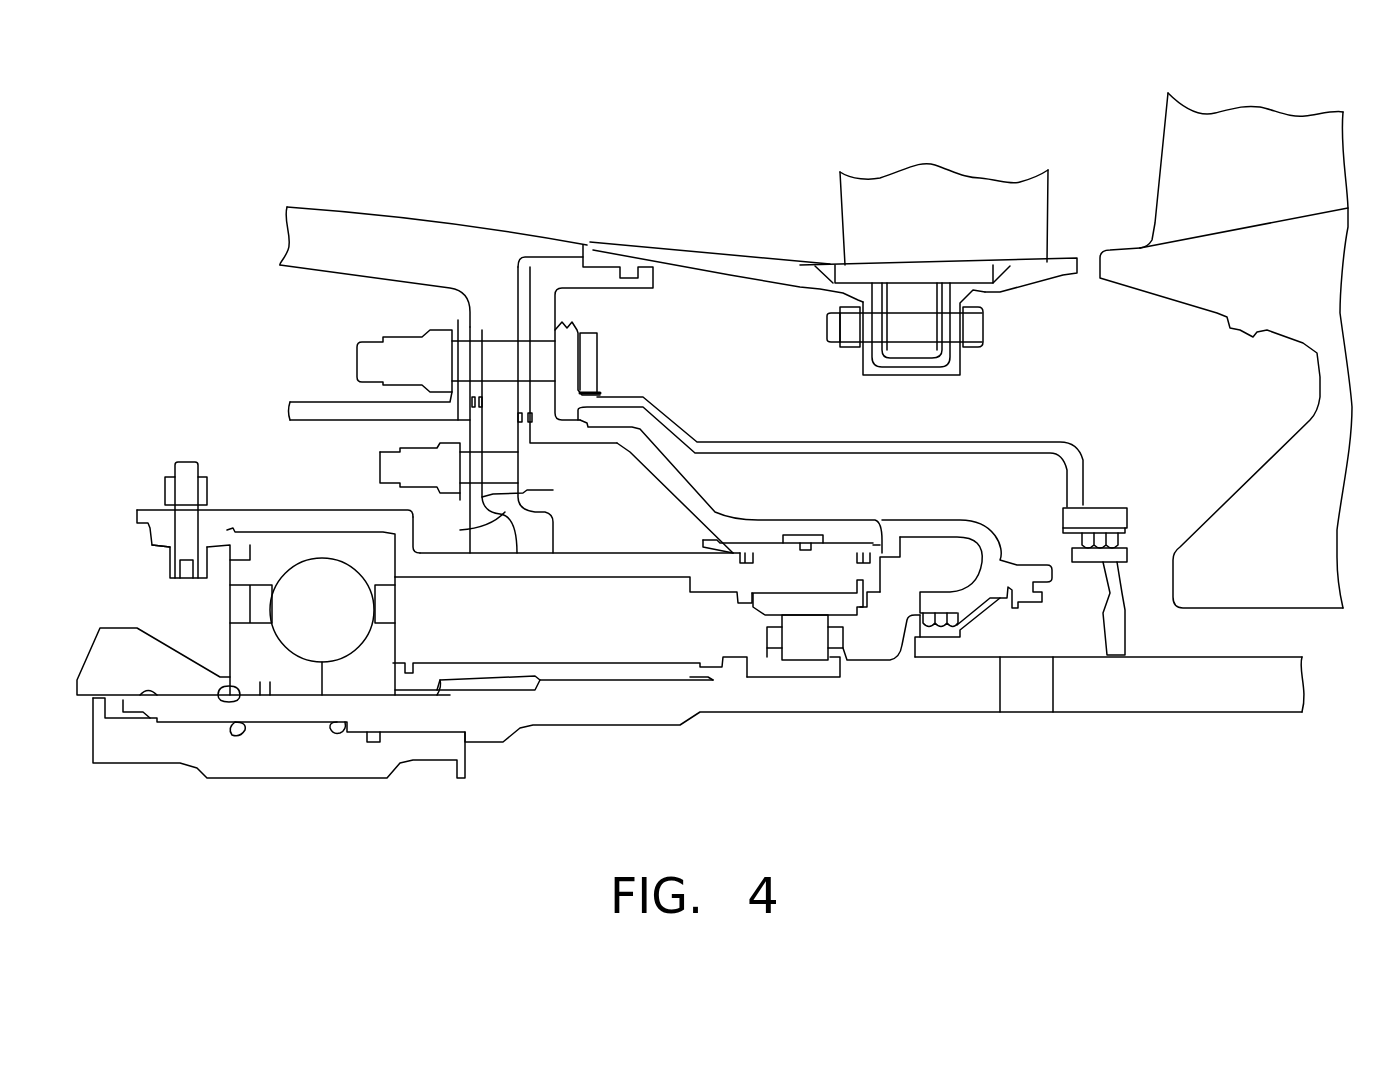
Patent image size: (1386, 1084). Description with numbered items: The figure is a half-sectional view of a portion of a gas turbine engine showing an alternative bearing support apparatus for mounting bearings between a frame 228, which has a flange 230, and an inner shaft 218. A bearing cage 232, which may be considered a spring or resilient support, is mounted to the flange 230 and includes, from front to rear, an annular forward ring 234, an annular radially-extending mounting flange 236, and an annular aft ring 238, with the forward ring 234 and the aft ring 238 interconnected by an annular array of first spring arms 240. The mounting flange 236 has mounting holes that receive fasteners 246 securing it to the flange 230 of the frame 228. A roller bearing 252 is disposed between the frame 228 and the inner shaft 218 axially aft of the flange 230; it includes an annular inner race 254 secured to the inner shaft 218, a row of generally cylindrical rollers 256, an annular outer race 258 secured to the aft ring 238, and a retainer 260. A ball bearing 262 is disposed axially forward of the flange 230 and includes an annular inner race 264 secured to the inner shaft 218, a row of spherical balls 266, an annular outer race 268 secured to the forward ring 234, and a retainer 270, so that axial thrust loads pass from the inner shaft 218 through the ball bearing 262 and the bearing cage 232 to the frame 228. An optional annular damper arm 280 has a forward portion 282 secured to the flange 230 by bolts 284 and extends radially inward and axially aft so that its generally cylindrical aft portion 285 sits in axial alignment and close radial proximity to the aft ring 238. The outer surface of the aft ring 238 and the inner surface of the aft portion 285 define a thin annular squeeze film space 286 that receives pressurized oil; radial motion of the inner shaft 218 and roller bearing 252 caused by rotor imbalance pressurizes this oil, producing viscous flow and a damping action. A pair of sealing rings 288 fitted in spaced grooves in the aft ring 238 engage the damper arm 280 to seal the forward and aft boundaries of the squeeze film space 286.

The inner shaft 218 is at (558, 712).
The frame 228 is at (337, 258).
The flange 230 is at (478, 290).
The bearing cage 232 is at (568, 545).
The annular forward ring 234 is at (290, 520).
The mounting flange 236 is at (467, 441).
The annular aft ring 238 is at (868, 583).
The first spring arms 240 is at (520, 565).
The fasteners 246 is at (380, 463).
The roller bearing 252 is at (748, 640).
The annular inner race 254 is at (805, 665).
The rollers 256 is at (805, 637).
The annular outer race 258 is at (825, 603).
The retainer 260 is at (838, 640).
The ball bearing 262 is at (213, 621).
The annular inner race 264 is at (278, 663).
The balls 266 is at (322, 610).
The annular outer race 268 is at (258, 562).
The retainer 270 is at (400, 614).
The damper arm 280 is at (795, 496).
The forward portion 282 is at (643, 450).
The bolts 284 is at (585, 360).
The aft portion 285 is at (788, 532).
The squeeze film space 286 is at (882, 531).
The sealing rings 288 is at (748, 553).